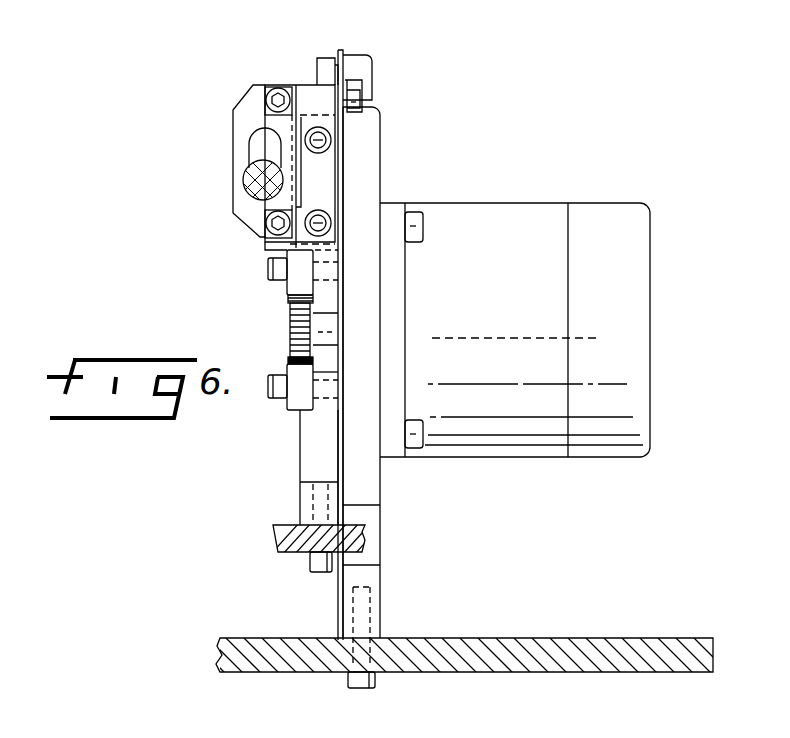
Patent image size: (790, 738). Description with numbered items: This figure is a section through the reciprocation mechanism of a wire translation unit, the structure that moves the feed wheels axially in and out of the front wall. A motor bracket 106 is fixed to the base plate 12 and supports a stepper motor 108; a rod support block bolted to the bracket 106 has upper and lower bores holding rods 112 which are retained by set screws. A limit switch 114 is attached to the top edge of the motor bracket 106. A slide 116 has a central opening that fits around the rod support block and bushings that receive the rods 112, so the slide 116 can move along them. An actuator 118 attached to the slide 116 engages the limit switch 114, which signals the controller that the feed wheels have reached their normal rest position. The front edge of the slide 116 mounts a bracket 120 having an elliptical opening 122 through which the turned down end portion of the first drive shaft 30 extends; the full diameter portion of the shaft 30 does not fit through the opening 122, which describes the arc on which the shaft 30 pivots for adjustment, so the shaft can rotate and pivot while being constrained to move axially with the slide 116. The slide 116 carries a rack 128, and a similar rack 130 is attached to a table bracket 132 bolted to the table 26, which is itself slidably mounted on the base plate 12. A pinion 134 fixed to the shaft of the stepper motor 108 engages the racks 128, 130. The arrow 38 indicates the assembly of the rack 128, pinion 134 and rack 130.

The base plate 12 is at (568, 638).
The table 26 is at (273, 538).
The first drive shaft 30 is at (245, 182).
The adjustment assembly 38 is at (265, 306).
The motor bracket 106 is at (380, 592).
The stepper motor 108 is at (503, 210).
The rods 112 is at (323, 217).
The limit switch 114 is at (367, 56).
The slide 116 is at (303, 80).
The actuator 118 is at (343, 50).
The bracket 120 is at (245, 103).
The elliptical opening 122 is at (248, 142).
The rack 128 is at (287, 287).
The rack 130 is at (297, 410).
The table bracket 132 is at (302, 475).
The pinion 134 is at (289, 328).